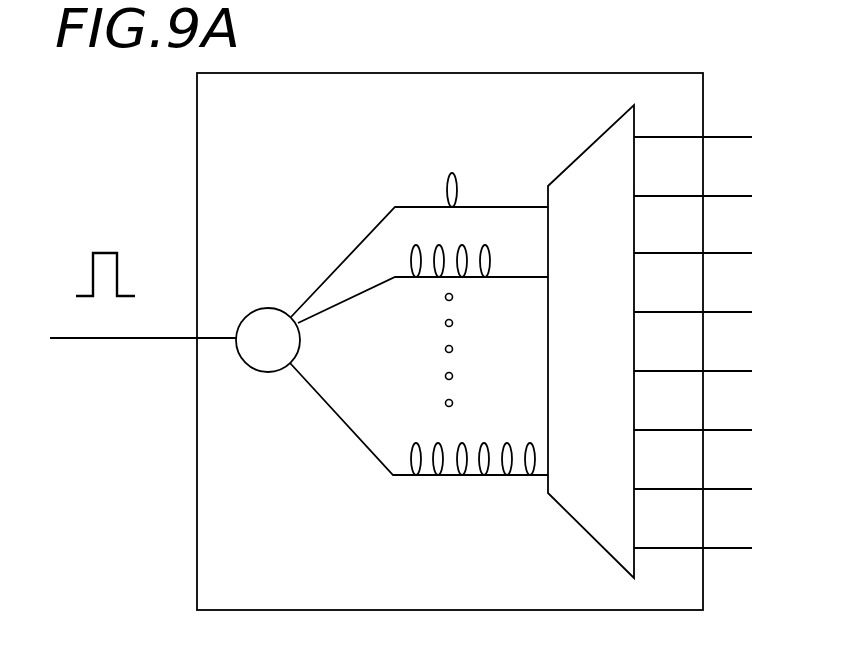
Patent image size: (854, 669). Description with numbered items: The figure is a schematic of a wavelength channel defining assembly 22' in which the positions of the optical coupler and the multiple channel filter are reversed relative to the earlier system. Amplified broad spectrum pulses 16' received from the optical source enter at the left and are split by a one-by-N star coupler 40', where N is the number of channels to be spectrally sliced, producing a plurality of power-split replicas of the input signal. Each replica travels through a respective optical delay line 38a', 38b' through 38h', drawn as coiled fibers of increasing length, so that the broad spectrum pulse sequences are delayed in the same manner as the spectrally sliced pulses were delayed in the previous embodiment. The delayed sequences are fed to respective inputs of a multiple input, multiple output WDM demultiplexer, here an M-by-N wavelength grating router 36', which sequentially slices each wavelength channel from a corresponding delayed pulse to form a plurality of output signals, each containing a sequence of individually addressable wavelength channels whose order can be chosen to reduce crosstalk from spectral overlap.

The wavelength channel defining assembly 22' is at (450, 308).
The amplified broad spectrum pulses 16' is at (143, 271).
The 1×N star coupler 40' is at (268, 298).
The optical delay line 38a' is at (419, 222).
The optical delay line 38b' is at (423, 300).
The optical delay line 38h' is at (419, 441).
The M×N wavelength grating router 36' is at (630, 341).